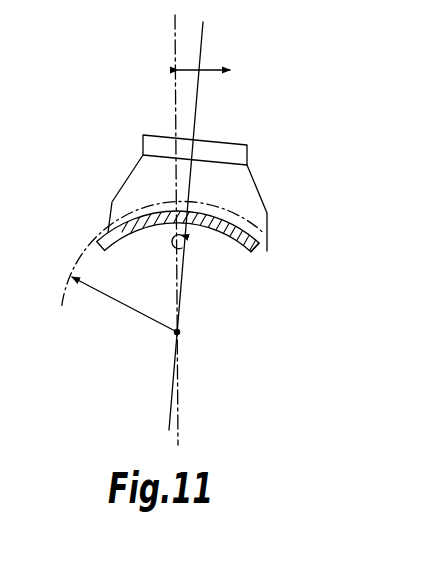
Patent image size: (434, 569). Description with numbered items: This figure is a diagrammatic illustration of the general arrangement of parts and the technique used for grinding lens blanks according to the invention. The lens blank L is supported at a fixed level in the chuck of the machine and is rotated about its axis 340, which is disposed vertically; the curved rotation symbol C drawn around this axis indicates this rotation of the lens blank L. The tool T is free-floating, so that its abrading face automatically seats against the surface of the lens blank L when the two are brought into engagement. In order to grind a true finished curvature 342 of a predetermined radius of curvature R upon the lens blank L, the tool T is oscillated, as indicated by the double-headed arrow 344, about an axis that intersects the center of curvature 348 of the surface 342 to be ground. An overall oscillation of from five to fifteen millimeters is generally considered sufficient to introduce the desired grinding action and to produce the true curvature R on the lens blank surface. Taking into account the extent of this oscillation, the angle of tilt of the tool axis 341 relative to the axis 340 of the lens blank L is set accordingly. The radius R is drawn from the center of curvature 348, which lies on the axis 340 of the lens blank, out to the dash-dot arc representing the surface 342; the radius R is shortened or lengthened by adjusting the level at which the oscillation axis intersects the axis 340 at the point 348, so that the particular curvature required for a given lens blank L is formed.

The axis of the lens blank 340 is at (178, 284).
The tool axis 341 is at (196, 103).
The finished curvature 342 is at (118, 223).
The double-headed arrow 344 is at (210, 66).
The center of curvature 348 is at (180, 332).
The tool T is at (243, 186).
The lens blank L is at (254, 248).
The radius of curvature R is at (120, 302).
The direction of rotation C is at (177, 242).